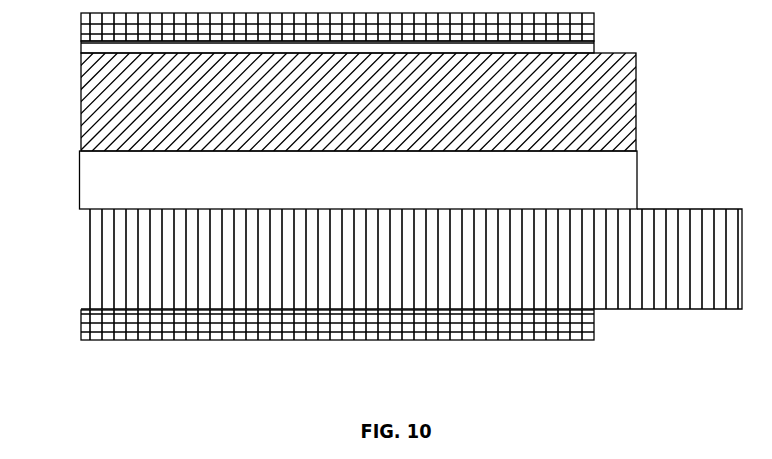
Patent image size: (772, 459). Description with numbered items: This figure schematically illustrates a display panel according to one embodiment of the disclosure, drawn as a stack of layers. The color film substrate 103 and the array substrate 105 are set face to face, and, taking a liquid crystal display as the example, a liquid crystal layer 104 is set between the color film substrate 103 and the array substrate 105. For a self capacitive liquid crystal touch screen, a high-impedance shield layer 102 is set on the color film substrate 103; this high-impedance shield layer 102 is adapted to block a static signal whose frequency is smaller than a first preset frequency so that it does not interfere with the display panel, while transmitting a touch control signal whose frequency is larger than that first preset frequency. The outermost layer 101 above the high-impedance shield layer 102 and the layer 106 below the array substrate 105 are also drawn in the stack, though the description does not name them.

The first electrode layer 101 is at (107, 24).
The high-impedance shield layer 102 is at (81, 48).
The color film substrate 103 is at (105, 104).
The liquid crystal layer 104 is at (107, 186).
The array substrate 105 is at (119, 262).
The third electrode layer 106 is at (85, 330).